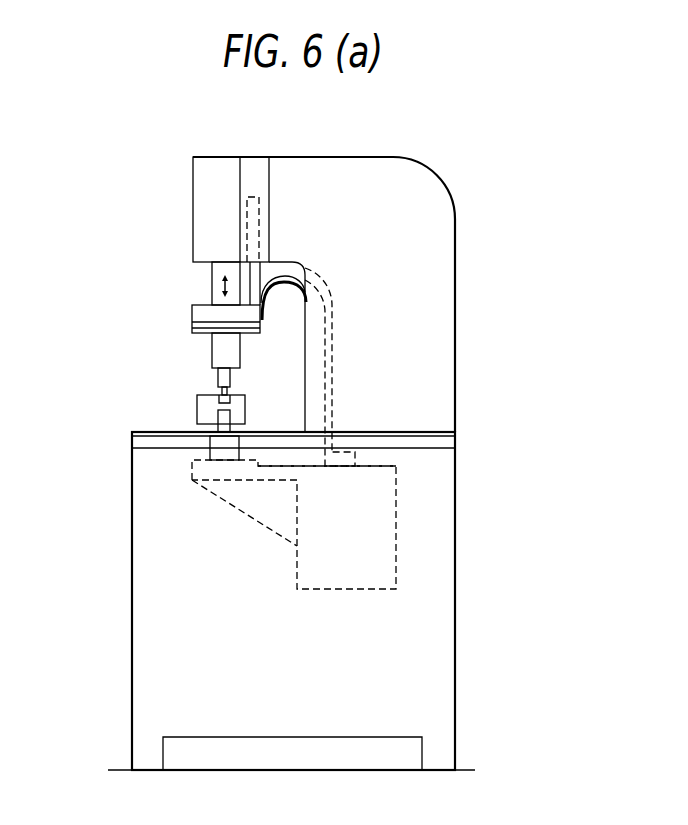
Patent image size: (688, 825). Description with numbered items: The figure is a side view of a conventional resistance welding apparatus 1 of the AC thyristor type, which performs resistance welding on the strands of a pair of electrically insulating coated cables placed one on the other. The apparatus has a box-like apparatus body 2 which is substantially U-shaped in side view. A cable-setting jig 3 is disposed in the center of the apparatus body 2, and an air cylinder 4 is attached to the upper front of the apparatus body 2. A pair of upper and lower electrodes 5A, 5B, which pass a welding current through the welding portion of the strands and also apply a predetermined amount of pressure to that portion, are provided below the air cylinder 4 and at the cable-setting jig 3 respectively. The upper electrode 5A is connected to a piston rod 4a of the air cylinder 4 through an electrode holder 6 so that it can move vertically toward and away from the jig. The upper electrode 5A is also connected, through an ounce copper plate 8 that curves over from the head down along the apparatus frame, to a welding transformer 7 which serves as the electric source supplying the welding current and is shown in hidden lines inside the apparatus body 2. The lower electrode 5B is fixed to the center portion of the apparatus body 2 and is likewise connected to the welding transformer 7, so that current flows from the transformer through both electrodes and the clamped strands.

The resistance welding apparatus 1 is at (470, 455).
The apparatus body 2 is at (120, 636).
The cable-setting jig 3 is at (197, 404).
The air cylinder 4 is at (193, 173).
The piston rod 4a is at (212, 278).
The upper electrode 5A is at (219, 380).
The lower electrode 5B is at (200, 413).
The electrode holder 6 is at (212, 350).
The welding transformer 7 is at (396, 567).
The ounce copper plate 8 is at (299, 266).